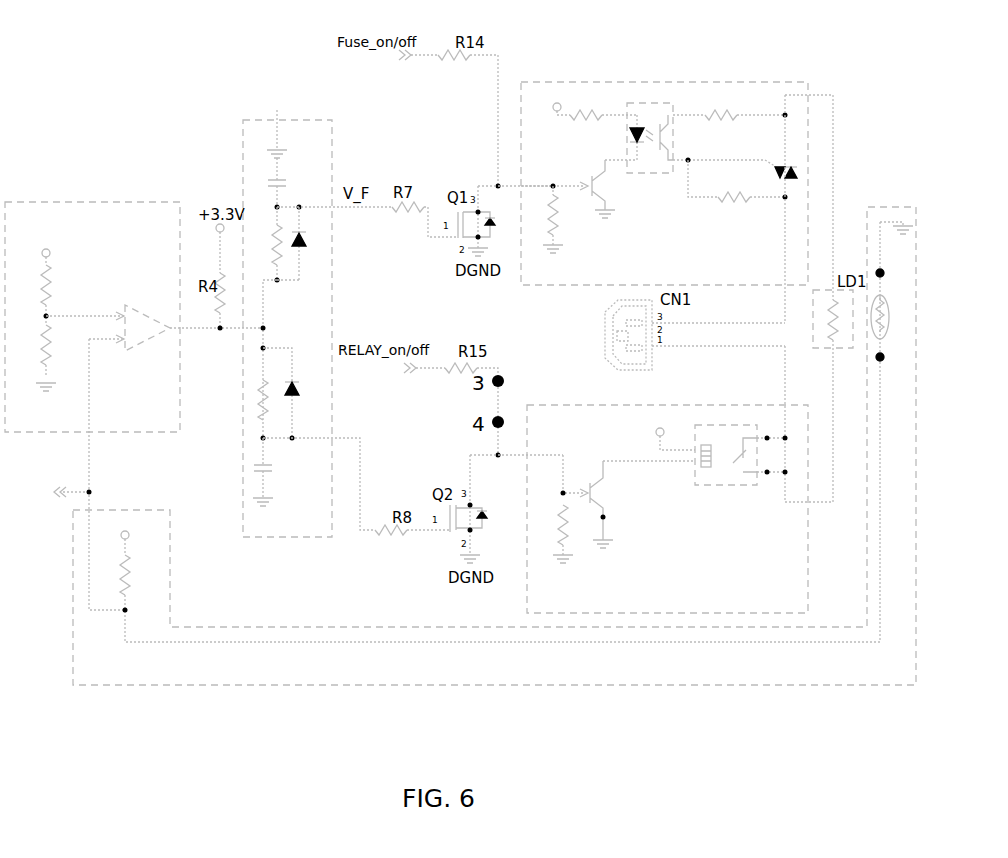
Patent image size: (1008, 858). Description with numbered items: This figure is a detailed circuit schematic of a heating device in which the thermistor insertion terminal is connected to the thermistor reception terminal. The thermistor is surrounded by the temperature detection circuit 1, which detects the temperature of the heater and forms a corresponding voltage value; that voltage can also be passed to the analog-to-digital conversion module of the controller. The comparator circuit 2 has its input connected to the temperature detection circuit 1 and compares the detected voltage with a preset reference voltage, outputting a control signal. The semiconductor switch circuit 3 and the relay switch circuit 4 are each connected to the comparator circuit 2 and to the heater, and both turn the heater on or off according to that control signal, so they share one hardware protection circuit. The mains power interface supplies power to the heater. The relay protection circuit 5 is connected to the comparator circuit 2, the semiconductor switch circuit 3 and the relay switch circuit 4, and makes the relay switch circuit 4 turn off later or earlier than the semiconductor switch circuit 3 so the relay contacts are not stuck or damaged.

The temperature detection circuit 1 is at (472, 686).
The comparator circuit 2 is at (100, 202).
The semiconductor switch circuit 3 is at (663, 82).
The relay switch circuit 4 is at (690, 613).
The relay protection circuit 5 is at (278, 120).